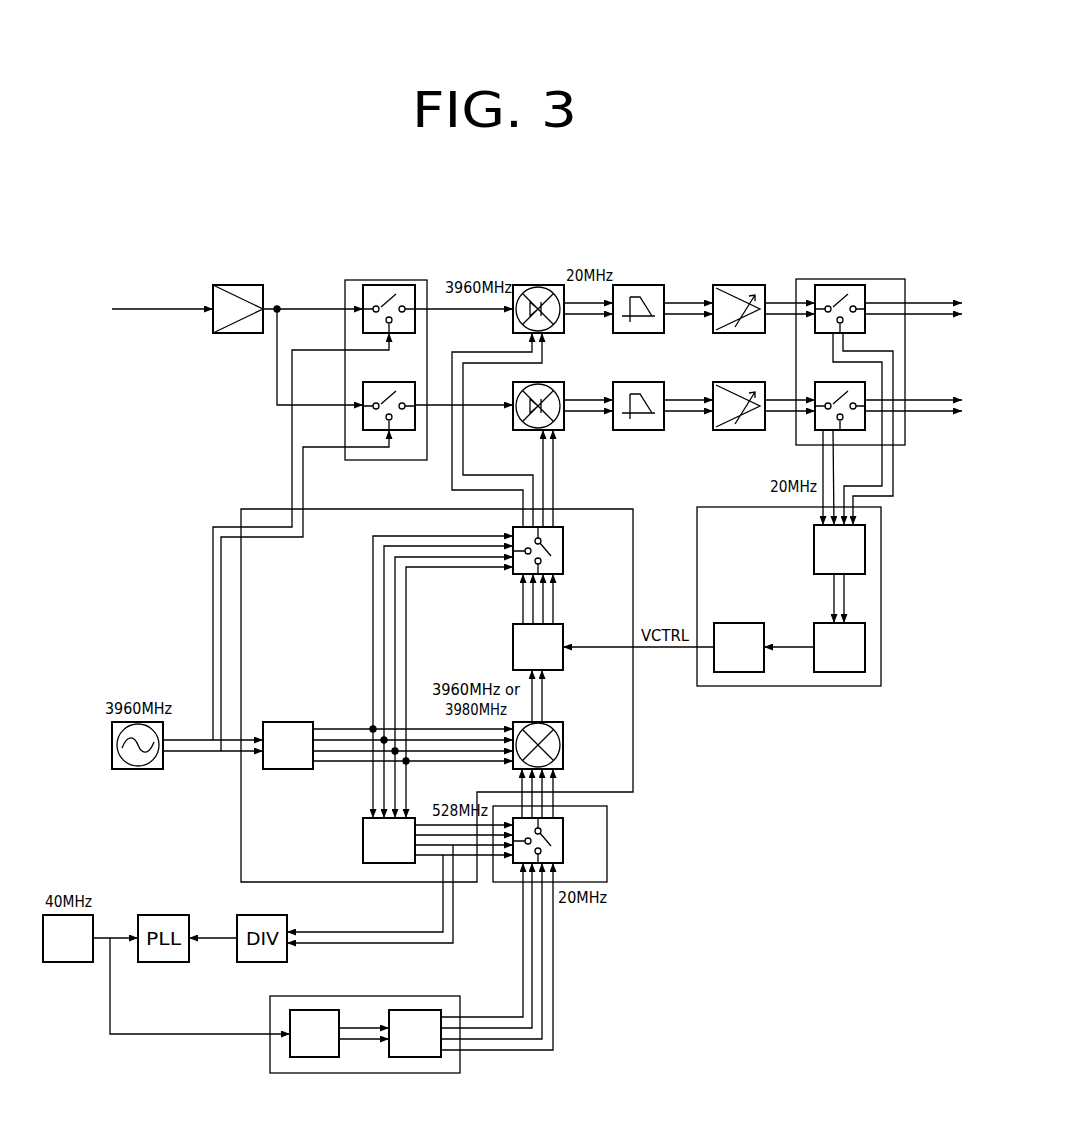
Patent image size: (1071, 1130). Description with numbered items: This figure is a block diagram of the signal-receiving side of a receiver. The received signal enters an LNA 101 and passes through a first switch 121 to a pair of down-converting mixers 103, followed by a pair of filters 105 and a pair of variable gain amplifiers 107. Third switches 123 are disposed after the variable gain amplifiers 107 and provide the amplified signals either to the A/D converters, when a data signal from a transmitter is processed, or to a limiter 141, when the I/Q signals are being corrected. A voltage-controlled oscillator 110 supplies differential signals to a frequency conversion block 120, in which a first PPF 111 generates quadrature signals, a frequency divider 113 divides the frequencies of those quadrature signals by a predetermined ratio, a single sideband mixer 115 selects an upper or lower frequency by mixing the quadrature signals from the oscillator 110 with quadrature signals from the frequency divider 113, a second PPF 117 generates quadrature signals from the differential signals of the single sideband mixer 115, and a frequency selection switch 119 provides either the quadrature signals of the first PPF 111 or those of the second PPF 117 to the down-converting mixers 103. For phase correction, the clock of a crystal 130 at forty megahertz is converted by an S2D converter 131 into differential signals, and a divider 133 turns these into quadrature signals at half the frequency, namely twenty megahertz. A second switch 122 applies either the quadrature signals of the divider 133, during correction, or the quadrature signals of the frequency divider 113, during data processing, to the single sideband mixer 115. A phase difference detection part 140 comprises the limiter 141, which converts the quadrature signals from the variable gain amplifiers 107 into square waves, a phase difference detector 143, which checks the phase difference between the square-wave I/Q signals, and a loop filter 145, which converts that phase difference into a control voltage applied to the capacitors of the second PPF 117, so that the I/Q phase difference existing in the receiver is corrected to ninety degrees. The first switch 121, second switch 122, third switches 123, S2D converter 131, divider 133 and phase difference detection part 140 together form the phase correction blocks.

The LNA 101 is at (238, 284).
The down-converting mixers 103 is at (537, 284).
The filters 105 is at (640, 284).
The variable gain amplifiers 107 is at (742, 284).
The voltage-controlled oscillator 110 is at (135, 772).
The first PPF 111 is at (284, 720).
The frequency divider 113 is at (388, 866).
The single sideband mixer 115 is at (564, 762).
The second PPF 117 is at (564, 660).
The frequency selection switch 119 is at (564, 567).
The frequency conversion block 120 is at (634, 765).
The first switch 121 is at (355, 280).
The second switch 122 is at (608, 845).
The third switches 123 is at (882, 279).
The crystal 130 is at (65, 965).
The S2D converter 131 is at (313, 1060).
The divider 133 is at (413, 1060).
The phase difference detection part 140 is at (786, 687).
The limiter 141 is at (866, 547).
The phase difference detector 143 is at (866, 646).
The loop filter 145 is at (748, 622).